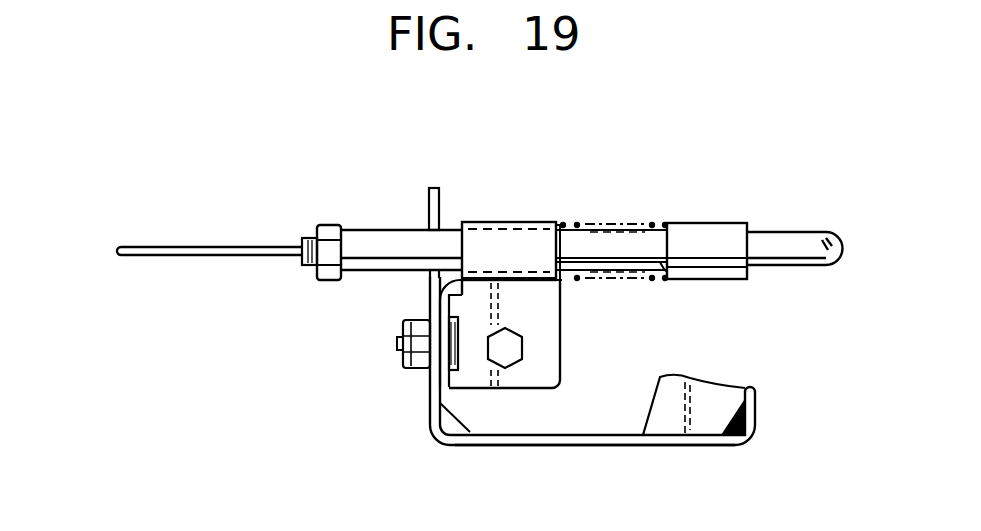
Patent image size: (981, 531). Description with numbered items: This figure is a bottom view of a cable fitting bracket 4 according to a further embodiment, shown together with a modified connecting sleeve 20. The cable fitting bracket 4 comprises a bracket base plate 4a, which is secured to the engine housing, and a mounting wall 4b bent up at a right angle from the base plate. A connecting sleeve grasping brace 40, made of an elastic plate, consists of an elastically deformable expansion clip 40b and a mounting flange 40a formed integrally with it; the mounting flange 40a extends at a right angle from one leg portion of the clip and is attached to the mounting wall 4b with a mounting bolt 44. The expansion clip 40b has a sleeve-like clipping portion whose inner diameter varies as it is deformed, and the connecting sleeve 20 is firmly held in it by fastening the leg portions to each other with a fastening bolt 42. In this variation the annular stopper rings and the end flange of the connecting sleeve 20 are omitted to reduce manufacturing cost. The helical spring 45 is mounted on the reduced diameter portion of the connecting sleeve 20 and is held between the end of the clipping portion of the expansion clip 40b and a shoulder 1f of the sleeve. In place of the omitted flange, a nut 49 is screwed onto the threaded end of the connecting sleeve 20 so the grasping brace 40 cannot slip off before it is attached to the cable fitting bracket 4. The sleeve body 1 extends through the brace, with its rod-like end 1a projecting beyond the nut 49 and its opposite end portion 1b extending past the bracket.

The connecting sleeve 1 is at (750, 230).
The connecting sleeve rod end 1a is at (207, 246).
The connecting sleeve end portion 1b is at (812, 232).
The shoulder 1f is at (668, 270).
The cable fitting bracket 4 is at (758, 426).
The bracket base plate 4a is at (600, 438).
The mounting wall 4b is at (432, 190).
The connecting sleeve 20 is at (708, 223).
The connecting sleeve grasping brace 40 is at (522, 220).
The mounting flange 40a is at (443, 373).
The expansion clip 40b is at (540, 313).
The fastening bolt 42 is at (512, 352).
The mounting bolt 44 is at (397, 347).
The helical spring 45 is at (650, 223).
The nut 49 is at (327, 225).